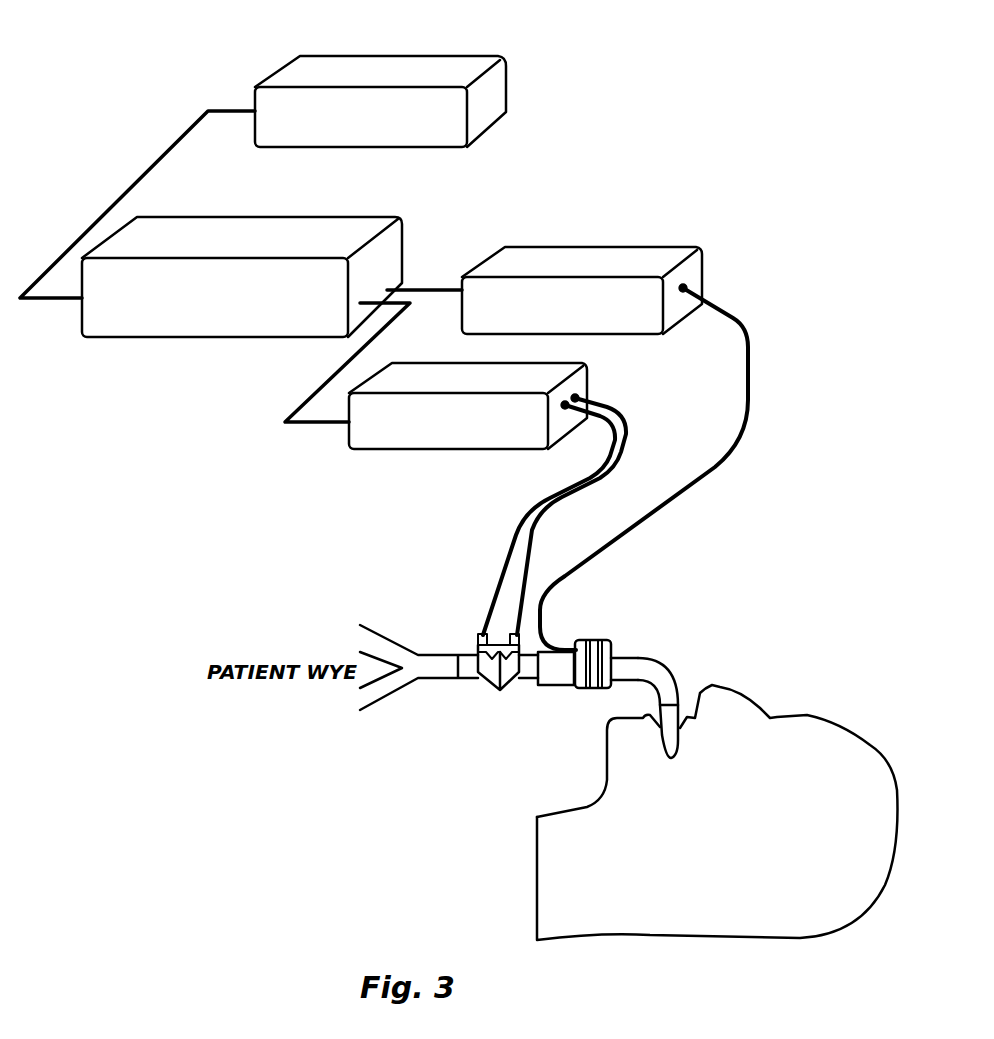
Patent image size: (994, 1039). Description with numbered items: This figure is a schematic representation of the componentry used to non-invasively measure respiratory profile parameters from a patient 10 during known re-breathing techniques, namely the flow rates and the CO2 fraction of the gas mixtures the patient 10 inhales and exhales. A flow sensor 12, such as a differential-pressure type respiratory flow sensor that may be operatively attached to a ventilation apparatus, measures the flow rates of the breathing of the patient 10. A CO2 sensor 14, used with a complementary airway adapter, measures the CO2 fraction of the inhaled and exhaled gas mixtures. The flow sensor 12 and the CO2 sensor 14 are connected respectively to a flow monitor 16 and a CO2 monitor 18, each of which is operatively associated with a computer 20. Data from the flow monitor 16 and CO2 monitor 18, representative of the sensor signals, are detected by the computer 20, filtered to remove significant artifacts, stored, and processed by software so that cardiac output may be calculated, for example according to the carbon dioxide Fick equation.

The patient 10 is at (555, 895).
The flow sensor 12 is at (488, 682).
The CO2 sensor 14 is at (603, 658).
The flow monitor 16 is at (388, 438).
The CO2 monitor 18 is at (598, 258).
The computer 20 is at (94, 106).